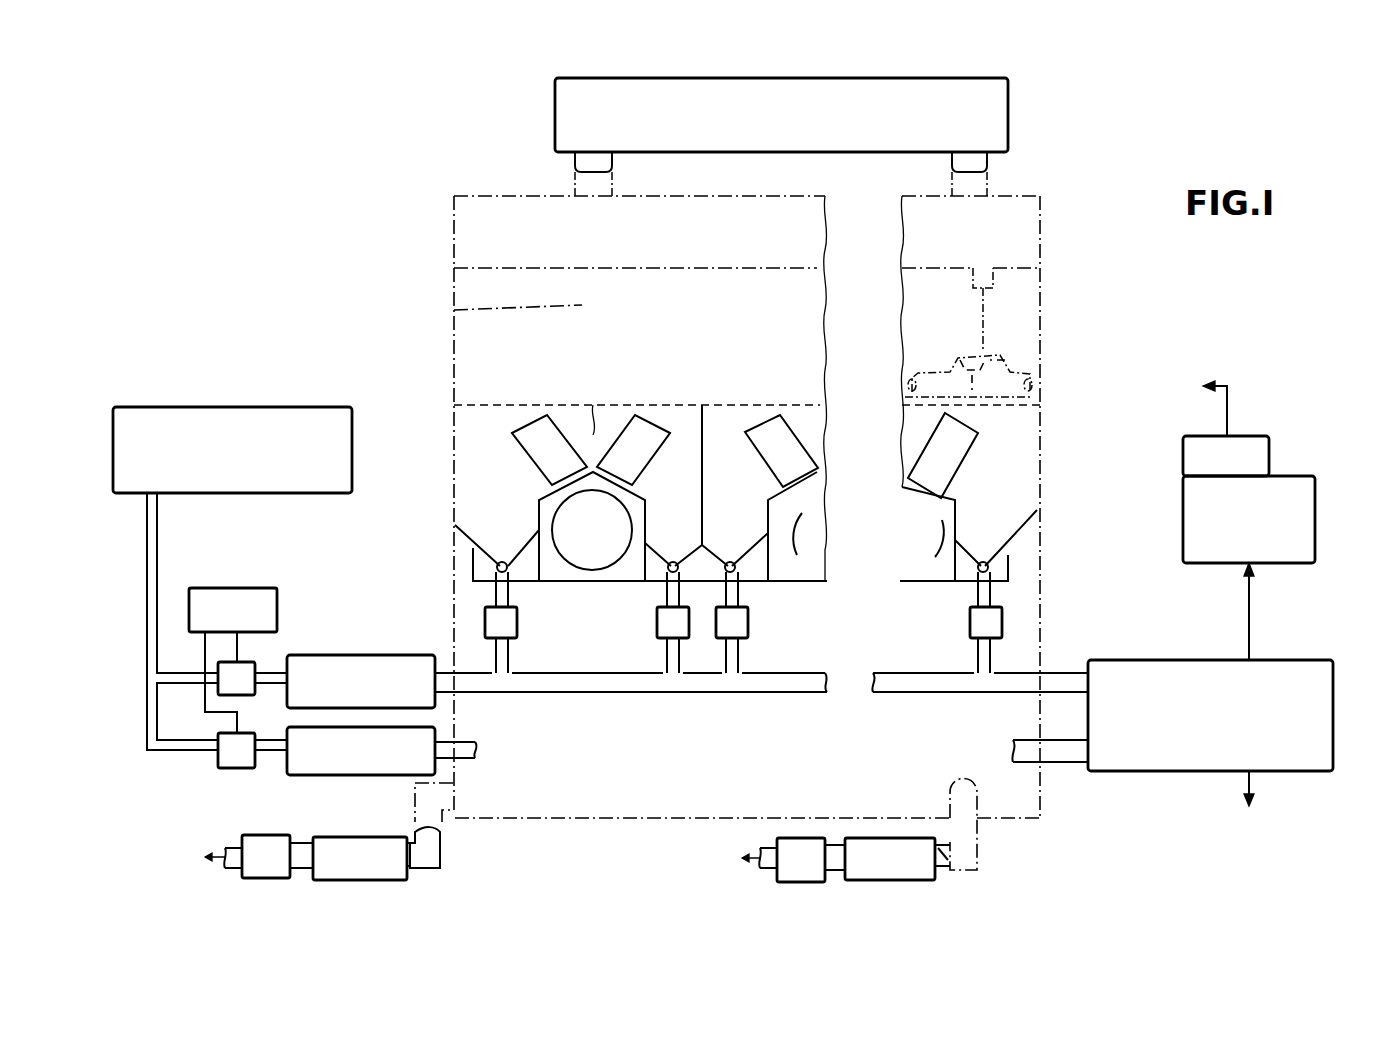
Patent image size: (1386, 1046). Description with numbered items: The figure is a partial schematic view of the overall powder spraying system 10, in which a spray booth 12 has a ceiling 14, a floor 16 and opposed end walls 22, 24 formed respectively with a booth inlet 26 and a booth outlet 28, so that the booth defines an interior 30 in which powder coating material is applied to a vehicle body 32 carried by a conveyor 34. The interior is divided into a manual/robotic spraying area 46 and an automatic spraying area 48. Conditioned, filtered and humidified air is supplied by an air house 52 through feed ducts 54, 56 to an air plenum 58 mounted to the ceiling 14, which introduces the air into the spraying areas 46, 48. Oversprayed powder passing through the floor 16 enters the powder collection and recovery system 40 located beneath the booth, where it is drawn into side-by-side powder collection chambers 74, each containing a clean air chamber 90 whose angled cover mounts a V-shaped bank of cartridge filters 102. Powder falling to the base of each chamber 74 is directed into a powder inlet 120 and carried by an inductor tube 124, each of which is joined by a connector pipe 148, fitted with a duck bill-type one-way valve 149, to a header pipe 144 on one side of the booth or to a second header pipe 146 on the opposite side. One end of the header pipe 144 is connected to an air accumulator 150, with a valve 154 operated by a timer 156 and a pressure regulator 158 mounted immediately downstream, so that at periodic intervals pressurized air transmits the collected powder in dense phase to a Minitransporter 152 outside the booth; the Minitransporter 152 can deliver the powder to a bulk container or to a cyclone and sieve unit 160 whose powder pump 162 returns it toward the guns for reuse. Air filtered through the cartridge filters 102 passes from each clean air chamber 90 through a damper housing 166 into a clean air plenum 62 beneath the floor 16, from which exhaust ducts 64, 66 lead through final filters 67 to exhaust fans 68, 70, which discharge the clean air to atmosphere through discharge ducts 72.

The powder spraying system 10 is at (1118, 332).
The spray booth 12 is at (1040, 315).
The ceiling 14 is at (930, 265).
The floor 16 is at (745, 403).
The end wall 22 is at (1040, 215).
The end wall 24 is at (450, 200).
The booth inlet 26 is at (1030, 373).
The booth outlet 28 is at (450, 365).
The interior 30 is at (746, 340).
The vehicle body 32 is at (935, 372).
The conveyor 34 is at (1040, 278).
The powder collection and recovery system 40 is at (1050, 487).
The manual/robotic spraying area 46 is at (1040, 335).
The automatic spraying area 48 is at (440, 314).
The air house 52 is at (1008, 118).
The feed duct 54 is at (578, 170).
The feed duct 56 is at (975, 170).
The air plenum 58 is at (900, 218).
The clean air plenum 62 is at (728, 777).
The exhaust duct 64 is at (440, 845).
The exhaust duct 66 is at (980, 842).
The final filter 67 is at (362, 880).
The exhaust fan 68 is at (272, 878).
The exhaust fan 70 is at (805, 882).
The discharge duct 72 is at (230, 872).
The powder collection chamber 74 is at (597, 405).
The clean air chamber 90 is at (622, 573).
The cartridge filter 102 is at (565, 455).
The powder inlet 120 is at (505, 555).
The inductor tube 124 is at (497, 567).
The first header pipe 144 is at (848, 662).
The second header pipe 146 is at (478, 745).
The connector pipe 148 is at (509, 592).
The one-way valve 149 is at (517, 625).
The air accumulator 150 is at (278, 385).
The Minitransporter 152 is at (1200, 666).
The valve 154 is at (255, 665).
The timer 156 is at (277, 590).
The pressure regulator 158 is at (420, 662).
The cyclone and sieve unit 160 is at (1316, 520).
The powder pump 162 is at (1270, 442).
The damper housing 166 is at (617, 530).